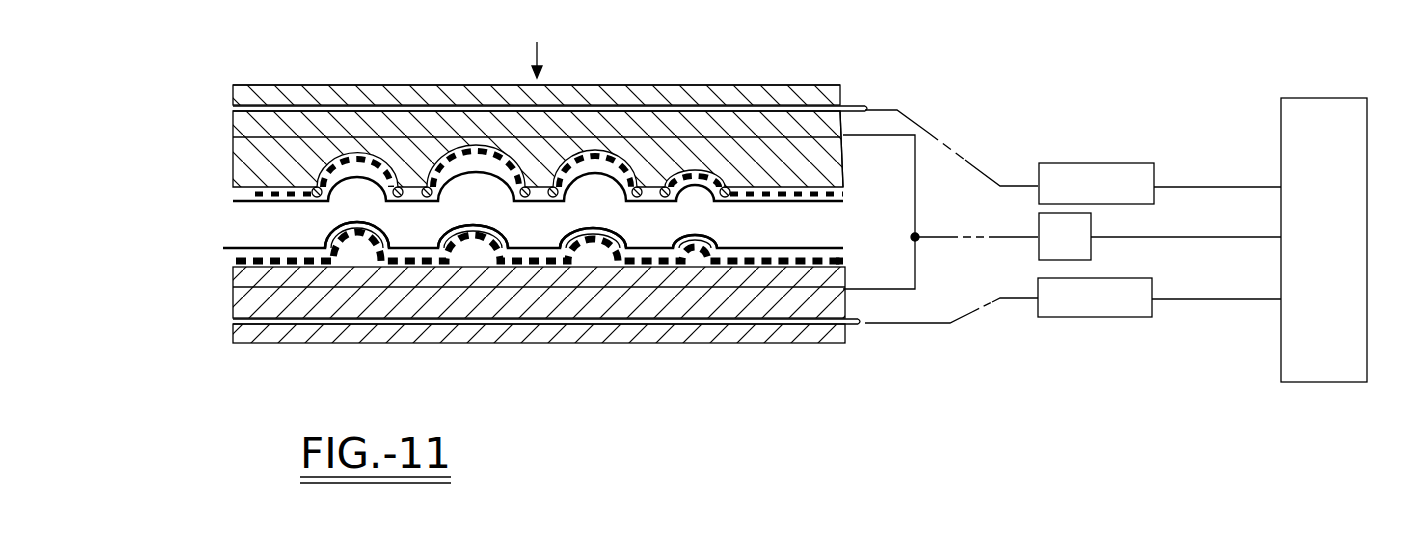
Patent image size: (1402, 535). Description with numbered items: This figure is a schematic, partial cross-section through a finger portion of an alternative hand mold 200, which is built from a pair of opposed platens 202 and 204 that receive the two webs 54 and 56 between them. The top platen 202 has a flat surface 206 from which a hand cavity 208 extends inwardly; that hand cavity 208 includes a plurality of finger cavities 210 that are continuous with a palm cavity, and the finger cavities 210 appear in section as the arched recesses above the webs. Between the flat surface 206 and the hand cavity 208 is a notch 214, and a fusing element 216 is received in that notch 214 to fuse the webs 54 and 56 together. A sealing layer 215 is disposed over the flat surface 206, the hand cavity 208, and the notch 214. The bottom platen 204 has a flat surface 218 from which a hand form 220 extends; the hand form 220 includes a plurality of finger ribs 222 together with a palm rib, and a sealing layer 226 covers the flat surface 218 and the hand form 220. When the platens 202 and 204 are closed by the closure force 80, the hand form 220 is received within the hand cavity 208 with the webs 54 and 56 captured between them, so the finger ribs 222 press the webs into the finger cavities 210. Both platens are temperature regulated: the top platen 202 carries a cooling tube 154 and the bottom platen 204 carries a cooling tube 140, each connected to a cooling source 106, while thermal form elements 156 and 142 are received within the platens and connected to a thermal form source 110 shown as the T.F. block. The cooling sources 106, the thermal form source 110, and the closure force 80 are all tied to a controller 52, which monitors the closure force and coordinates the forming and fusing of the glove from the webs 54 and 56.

The hand mold 200 is at (140, 63).
The platen 202 is at (237, 158).
The flat surface 206 is at (237, 183).
The web 56 is at (233, 203).
The web 54 is at (233, 247).
The flat surface 218 is at (238, 258).
The platen 204 is at (237, 307).
The closure force 80 is at (537, 52).
The cooling tube 154 is at (697, 108).
The hand cavity 208 is at (350, 178).
The fusing element 216 is at (512, 198).
The hand form 220 is at (616, 226).
The finger cavities 210 is at (705, 185).
The notch 214 is at (790, 192).
The sealing layer 215 is at (843, 193).
The sealing layer 226 is at (845, 262).
The thermal form element 156 is at (915, 200).
The thermal form element 142 is at (915, 272).
The finger ribs 222 is at (765, 358).
The cooling tube 140 is at (670, 323).
The cooling source 106 is at (1148, 163).
The thermal form source 110 is at (1091, 230).
The controller 52 is at (1338, 98).